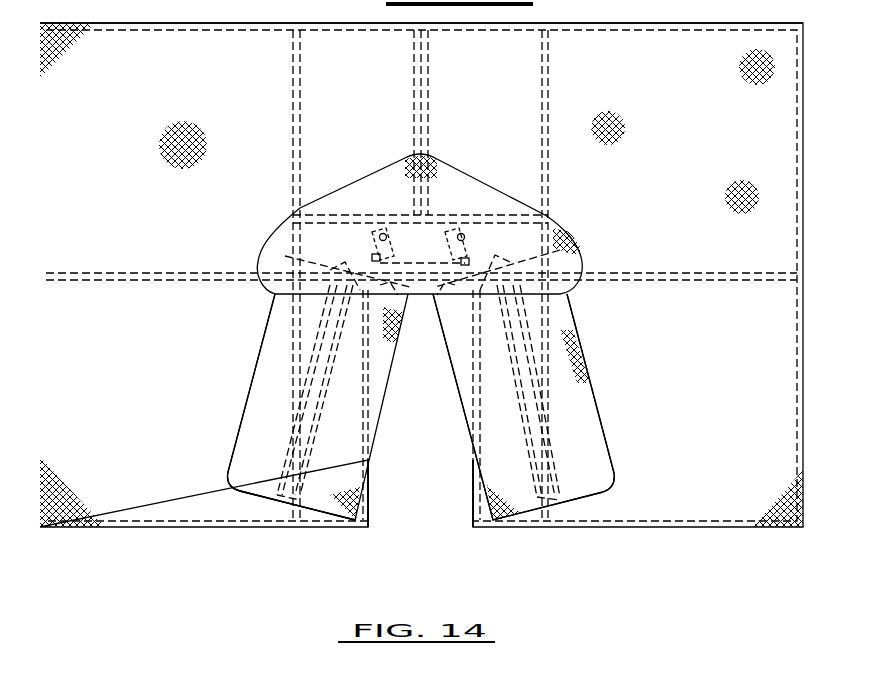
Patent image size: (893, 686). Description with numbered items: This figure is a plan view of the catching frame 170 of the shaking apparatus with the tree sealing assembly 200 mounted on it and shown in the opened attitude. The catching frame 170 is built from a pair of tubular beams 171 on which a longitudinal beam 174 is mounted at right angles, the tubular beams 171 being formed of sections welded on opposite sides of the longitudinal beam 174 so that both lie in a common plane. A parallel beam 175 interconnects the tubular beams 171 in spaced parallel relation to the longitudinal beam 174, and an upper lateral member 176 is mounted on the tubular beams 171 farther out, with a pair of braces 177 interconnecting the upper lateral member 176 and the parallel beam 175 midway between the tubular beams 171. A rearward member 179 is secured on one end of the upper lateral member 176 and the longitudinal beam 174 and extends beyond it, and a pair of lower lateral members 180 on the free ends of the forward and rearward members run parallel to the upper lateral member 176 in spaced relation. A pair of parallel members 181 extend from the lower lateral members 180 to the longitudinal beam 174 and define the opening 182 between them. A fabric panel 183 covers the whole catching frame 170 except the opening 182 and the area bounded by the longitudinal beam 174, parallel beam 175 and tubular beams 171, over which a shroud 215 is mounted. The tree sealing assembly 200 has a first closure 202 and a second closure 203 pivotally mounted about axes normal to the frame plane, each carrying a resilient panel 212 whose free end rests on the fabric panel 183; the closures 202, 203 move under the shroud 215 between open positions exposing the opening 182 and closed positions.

The catching frame 170 is at (808, 145).
The tubular beams 171 is at (298, 80).
The longitudinal beam 174 is at (632, 273).
The parallel beam 175 is at (478, 215).
The upper lateral member 176 is at (345, 22).
The braces 177 is at (425, 72).
The rearward member 179 is at (800, 183).
The lower lateral members 180 is at (130, 525).
The parallel members 181 is at (473, 472).
The opening 182 is at (437, 505).
The fabric panel 183 is at (684, 110).
The tree sealing assembly 200 is at (256, 506).
The first closure 202 is at (327, 510).
The second closure 203 is at (518, 515).
The resilient panel 212 is at (274, 445).
The shroud 215 is at (442, 162).